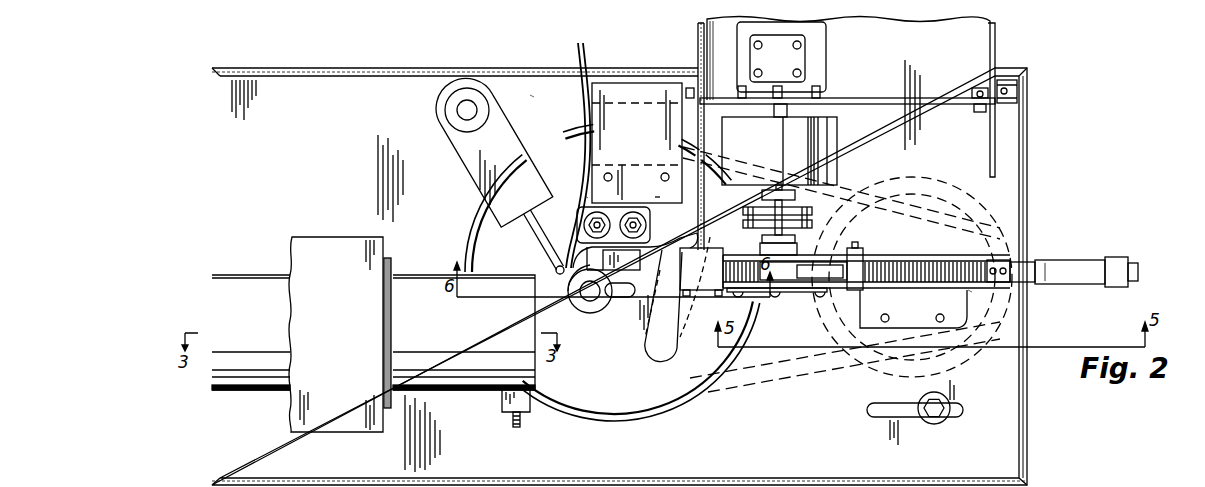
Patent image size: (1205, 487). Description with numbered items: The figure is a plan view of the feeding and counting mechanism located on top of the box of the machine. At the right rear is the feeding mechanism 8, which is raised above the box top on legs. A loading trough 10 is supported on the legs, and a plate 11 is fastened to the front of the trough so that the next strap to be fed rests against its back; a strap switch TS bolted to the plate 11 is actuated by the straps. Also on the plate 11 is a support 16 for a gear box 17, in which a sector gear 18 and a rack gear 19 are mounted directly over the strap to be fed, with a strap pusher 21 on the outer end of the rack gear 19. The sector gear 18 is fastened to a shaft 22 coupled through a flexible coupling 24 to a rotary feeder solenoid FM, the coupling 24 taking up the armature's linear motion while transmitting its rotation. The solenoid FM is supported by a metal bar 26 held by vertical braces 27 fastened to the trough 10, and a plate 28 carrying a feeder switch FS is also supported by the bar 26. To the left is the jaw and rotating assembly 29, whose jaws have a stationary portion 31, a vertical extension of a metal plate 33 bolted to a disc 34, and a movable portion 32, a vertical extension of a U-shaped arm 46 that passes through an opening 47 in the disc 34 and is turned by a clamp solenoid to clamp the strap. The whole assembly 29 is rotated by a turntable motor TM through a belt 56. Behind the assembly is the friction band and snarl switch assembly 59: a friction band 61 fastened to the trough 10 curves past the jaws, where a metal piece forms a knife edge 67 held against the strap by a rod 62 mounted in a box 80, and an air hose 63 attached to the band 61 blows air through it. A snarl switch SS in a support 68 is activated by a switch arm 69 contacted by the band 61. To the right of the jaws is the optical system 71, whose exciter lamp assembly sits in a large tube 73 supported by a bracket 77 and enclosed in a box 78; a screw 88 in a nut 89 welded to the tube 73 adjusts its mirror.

The feeding mechanism 8 is at (1020, 104).
The loading trough 10 is at (975, 38).
The plate 11 is at (972, 289).
The support 16 is at (866, 296).
The gear box 17 is at (866, 296).
The sector gear 18 is at (745, 292).
The rack gear 19 is at (1012, 248).
The strap pusher 21 is at (1062, 265).
The shaft 22 is at (770, 250).
The flexible coupling 24 is at (760, 222).
The metal bar 26 is at (955, 97).
The vertical braces 27 is at (700, 78).
The plate 28 is at (818, 30).
The jaw and rotating assembly 29 is at (462, 235).
The stationary portion of the jaw 31 is at (568, 291).
The movable portion of the jaw 32 is at (618, 298).
The metal plate 33 is at (587, 197).
The disc 34 is at (584, 287).
The U-shaped arm 46 is at (616, 294).
The opening 47 is at (672, 350).
The belt 56 is at (826, 366).
The friction band and snarl switch assembly 59 is at (530, 88).
The friction band 61 is at (672, 212).
The rod 62 is at (548, 262).
The air hose 63 is at (572, 65).
The knife edge 67 is at (556, 268).
The support 68 is at (638, 110).
The switch arm 69 is at (636, 222).
The optical system 71 is at (313, 228).
The large tube 73 is at (465, 358).
The bracket 77 is at (392, 272).
The box 78 is at (1035, 486).
The box 80 is at (468, 150).
The screw 88 is at (515, 425).
The nut 89 is at (503, 406).
The feeder switch FS is at (805, 60).
The rotary feeder solenoid FM is at (838, 164).
The turntable motor TM is at (952, 196).
The strap switch TS is at (923, 325).
The snarl switch SS is at (660, 197).